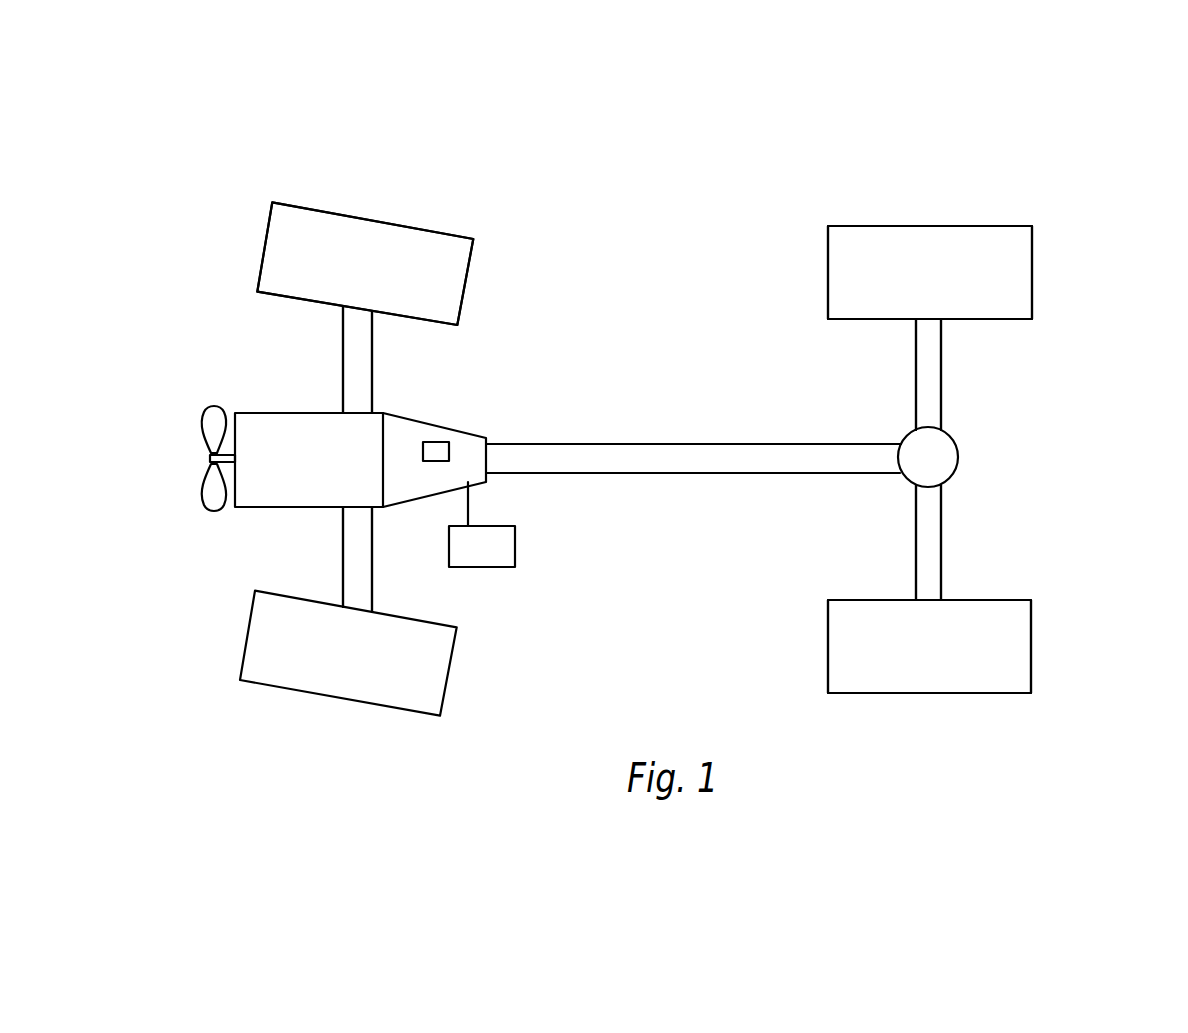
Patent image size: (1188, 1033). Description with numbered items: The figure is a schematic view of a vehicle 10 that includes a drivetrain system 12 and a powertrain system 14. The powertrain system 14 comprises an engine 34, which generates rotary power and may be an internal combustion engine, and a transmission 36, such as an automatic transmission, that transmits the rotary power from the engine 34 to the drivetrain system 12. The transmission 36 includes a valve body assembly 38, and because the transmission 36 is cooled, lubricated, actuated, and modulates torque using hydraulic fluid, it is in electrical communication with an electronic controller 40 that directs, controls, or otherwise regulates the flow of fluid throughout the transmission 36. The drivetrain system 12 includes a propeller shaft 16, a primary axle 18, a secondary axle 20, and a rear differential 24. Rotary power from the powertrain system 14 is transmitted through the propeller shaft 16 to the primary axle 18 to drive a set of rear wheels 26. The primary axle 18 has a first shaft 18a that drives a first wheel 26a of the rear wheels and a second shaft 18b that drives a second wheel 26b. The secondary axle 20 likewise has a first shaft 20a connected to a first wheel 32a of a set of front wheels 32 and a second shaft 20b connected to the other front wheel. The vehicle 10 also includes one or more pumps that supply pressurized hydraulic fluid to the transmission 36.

The vehicle 10 is at (698, 188).
The drivetrain system 12 is at (627, 410).
The powertrain system 14 is at (238, 373).
The propeller shaft 16 is at (675, 473).
The primary axle 18 is at (941, 383).
The first shaft 18a is at (941, 347).
The second shaft 18b is at (941, 542).
The secondary axle 20 is at (374, 358).
The first shaft 20a is at (343, 348).
The second shaft 20b is at (343, 580).
The rear differential 24 is at (959, 450).
The set of rear wheels 26 is at (1032, 272).
The first wheel 26a is at (979, 226).
The second wheel 26b is at (1031, 665).
The set of front wheels 32 is at (472, 265).
The first wheel 32a is at (358, 212).
The engine 34 is at (250, 508).
The transmission 36 is at (413, 419).
The valve body assembly 38 is at (440, 453).
The electronic controller 40 is at (506, 567).